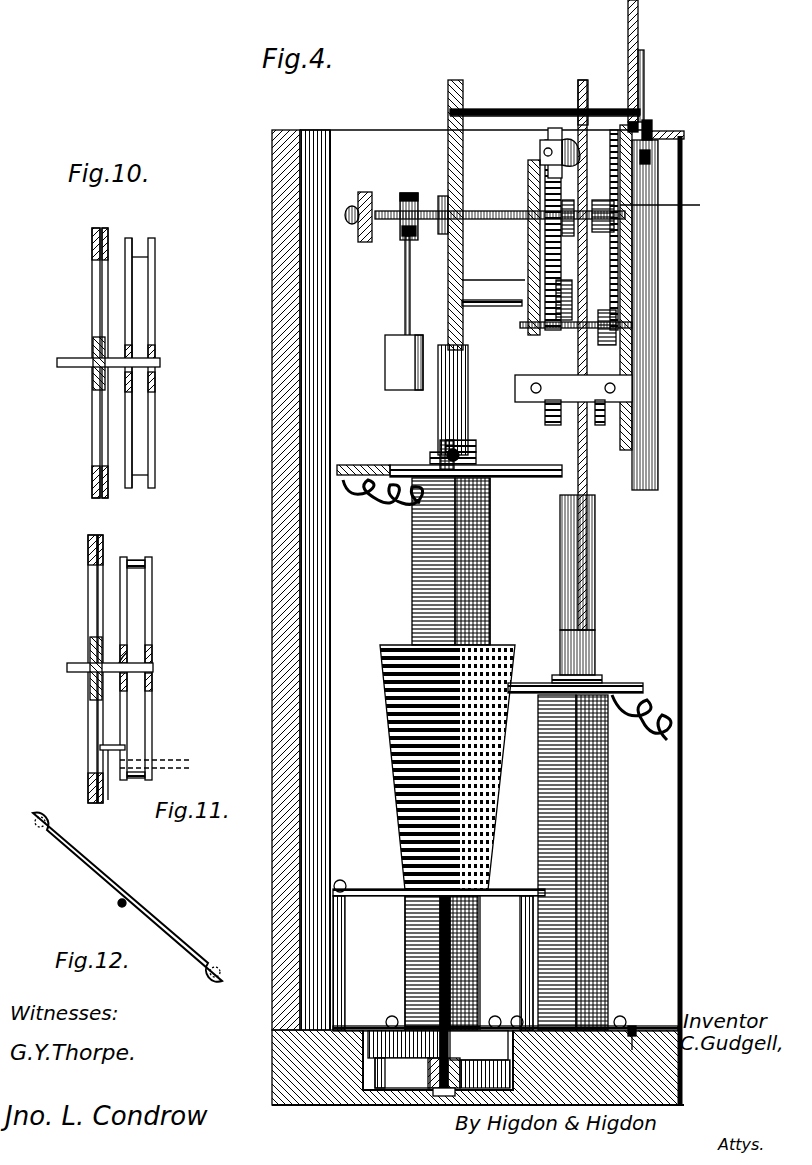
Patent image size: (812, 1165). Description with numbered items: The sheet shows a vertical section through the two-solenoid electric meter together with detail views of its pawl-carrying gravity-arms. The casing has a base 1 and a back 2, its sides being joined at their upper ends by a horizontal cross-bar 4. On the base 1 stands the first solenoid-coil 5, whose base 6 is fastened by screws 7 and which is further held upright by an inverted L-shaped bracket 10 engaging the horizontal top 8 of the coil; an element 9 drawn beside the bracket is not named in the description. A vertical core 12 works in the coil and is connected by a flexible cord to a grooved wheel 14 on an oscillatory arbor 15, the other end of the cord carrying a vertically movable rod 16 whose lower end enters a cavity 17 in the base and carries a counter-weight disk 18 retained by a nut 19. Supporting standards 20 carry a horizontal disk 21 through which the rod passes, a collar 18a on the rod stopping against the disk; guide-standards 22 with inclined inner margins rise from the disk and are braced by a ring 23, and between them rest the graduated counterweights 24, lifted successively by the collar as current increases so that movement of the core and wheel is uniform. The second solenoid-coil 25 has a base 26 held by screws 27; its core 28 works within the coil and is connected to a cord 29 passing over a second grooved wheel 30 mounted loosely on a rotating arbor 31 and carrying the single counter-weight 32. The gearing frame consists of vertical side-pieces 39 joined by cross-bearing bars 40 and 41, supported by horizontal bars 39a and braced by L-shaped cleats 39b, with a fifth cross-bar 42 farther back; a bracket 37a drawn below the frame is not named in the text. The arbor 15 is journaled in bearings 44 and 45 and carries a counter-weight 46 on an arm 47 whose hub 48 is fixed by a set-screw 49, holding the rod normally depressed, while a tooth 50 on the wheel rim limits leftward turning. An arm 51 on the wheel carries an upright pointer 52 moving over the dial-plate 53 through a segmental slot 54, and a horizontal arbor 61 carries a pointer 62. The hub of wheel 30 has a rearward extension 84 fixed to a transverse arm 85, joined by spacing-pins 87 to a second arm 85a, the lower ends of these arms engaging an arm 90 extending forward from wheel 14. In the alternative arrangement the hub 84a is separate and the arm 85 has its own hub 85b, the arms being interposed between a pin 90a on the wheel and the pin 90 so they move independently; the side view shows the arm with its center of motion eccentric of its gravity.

In FIG. 4, the base 1 is at (648, 1055).
In FIG. 4, the back 2 is at (272, 628).
In FIG. 11, the back 2 is at (227, 629).
In FIG. 4, the horizontal cross-bar 4 is at (672, 136).
In FIG. 4, the first solenoid-coil 5 is at (490, 598).
In FIG. 4, the base of the coil 6 is at (404, 1044).
In FIG. 4, the screws 7 is at (390, 1016).
In FIG. 4, the horizontal top of the coil 8 is at (532, 477).
In FIG. 4, the pin 9 is at (460, 452).
In FIG. 4, the inverted L-shaped bracket 10 is at (476, 452).
In FIG. 4, the vertical core 12 is at (458, 432).
In FIG. 4, the grooved wheel 14 is at (463, 255).
In FIG. 4, the horizontal oscillatory arbor 15 is at (480, 213).
In FIG. 4, the vertically movable rod 16 is at (443, 558).
In FIG. 4, the cavity or opening 17 is at (438, 1058).
In FIG. 4, the disk or counter-weight 18 is at (462, 370).
In FIG. 4, the enlargement or collar 18a is at (432, 897).
In FIG. 4, the nut 19 is at (433, 1098).
In FIG. 4, the vertical supporting standards 20 is at (545, 928).
In FIG. 4, the horizontal disk 21 is at (500, 889).
In FIG. 4, the vertical guide-standards 22 is at (492, 530).
In FIG. 4, the horizontal ring or annulus 23 is at (355, 465).
In FIG. 4, the movable counterweights 24 is at (388, 718).
In FIG. 4, the second solenoid-coil 25 is at (589, 862).
In FIG. 4, the base of the second coil 26 is at (632, 1026).
In FIG. 4, the screws 27 is at (517, 1016).
In FIG. 4, the bearing 28 is at (592, 652).
In FIG. 4, the cord 29 is at (586, 452).
In FIG. 4, the second grooved wheel 30 is at (618, 154).
In FIG. 10, the second grooved wheel 30 is at (92, 322).
In FIG. 11, the second grooved wheel 30 is at (88, 613).
In FIG. 10, the horizontal rotating arbor 31 is at (76, 367).
In FIG. 11, the horizontal rotating arbor 31 is at (72, 672).
In FIG. 12, the horizontal rotating arbor 31 is at (118, 906).
In FIG. 4, the single counter-weight 32 is at (594, 565).
In FIG. 4, the bracket 37a is at (552, 402).
In FIG. 4, the vertical side-pieces 39 is at (530, 262).
In FIG. 4, the horizontal bars 39a is at (646, 158).
In FIG. 4, the L-shaped cleats 39b is at (545, 140).
In FIG. 4, the cross-bearing bars 40 is at (532, 190).
In FIG. 4, the cross-bearing bars 41 is at (528, 315).
In FIG. 4, the fifth horizontal cross-bearing bar 42 is at (356, 205).
In FIG. 4, the bearing 44 is at (520, 260).
In FIG. 4, the bearing 45 is at (370, 200).
In FIG. 4, the counter-weight 46 is at (404, 362).
In FIG. 4, the arm 47 is at (410, 270).
In FIG. 4, the hub 48 is at (406, 234).
In FIG. 4, the set-screw 49 is at (410, 200).
In FIG. 4, the radial tooth 50 is at (450, 200).
In FIG. 4, the horizontal arm 51 is at (538, 110).
In FIG. 4, the pointer or index-arm 52 is at (644, 74).
In FIG. 4, the dial-plate 53 is at (638, 30).
In FIG. 4, the segmental slot 54 is at (640, 120).
In FIG. 4, the horizontal arbor 61 is at (600, 200).
In FIG. 4, the radial pointer 62 is at (672, 206).
In FIG. 4, the rearward hub extension 84 is at (566, 200).
In FIG. 10, the rearward hub extension 84 is at (98, 392).
In FIG. 11, the hub 84a is at (97, 698).
In FIG. 10, the transverse arm 85 is at (132, 305).
In FIG. 11, the transverse arm 85 is at (127, 598).
In FIG. 12, the transverse arm 85 is at (150, 908).
In FIG. 10, the second arm 85a is at (155, 325).
In FIG. 11, the second arm 85a is at (152, 613).
In FIG. 11, the independent hub 85b is at (122, 652).
In FIG. 4, the screws or spacing-pins 87 is at (580, 112).
In FIG. 10, the screws or spacing-pins 87 is at (140, 250).
In FIG. 11, the screws or spacing-pins 87 is at (137, 562).
In FIG. 4, the arm 90 is at (493, 289).
In FIG. 11, the arm 90 is at (172, 765).
In FIG. 11, the pin 90a is at (108, 790).